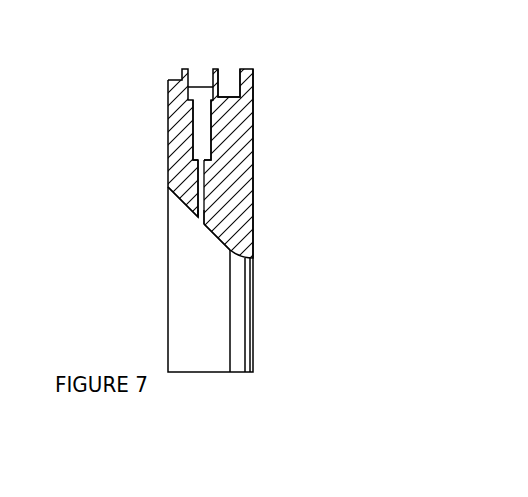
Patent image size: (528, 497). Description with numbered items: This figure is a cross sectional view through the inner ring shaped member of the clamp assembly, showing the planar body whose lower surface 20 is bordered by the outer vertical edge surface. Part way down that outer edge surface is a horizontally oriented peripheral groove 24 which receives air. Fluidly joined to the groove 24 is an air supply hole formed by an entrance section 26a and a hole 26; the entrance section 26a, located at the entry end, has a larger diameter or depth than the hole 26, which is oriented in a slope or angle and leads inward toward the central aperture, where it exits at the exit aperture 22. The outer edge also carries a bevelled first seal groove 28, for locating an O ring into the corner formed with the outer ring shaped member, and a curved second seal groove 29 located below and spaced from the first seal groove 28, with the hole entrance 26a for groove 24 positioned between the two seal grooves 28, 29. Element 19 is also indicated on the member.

The housing body 19 is at (168, 145).
The lower surface 20 is at (255, 172).
The exit aperture 22 is at (197, 223).
The groove 24 is at (197, 86).
The hole 26 is at (201, 190).
The entrance section 26a is at (201, 133).
The first seal groove 28 is at (166, 86).
The second seal groove 29 is at (230, 88).